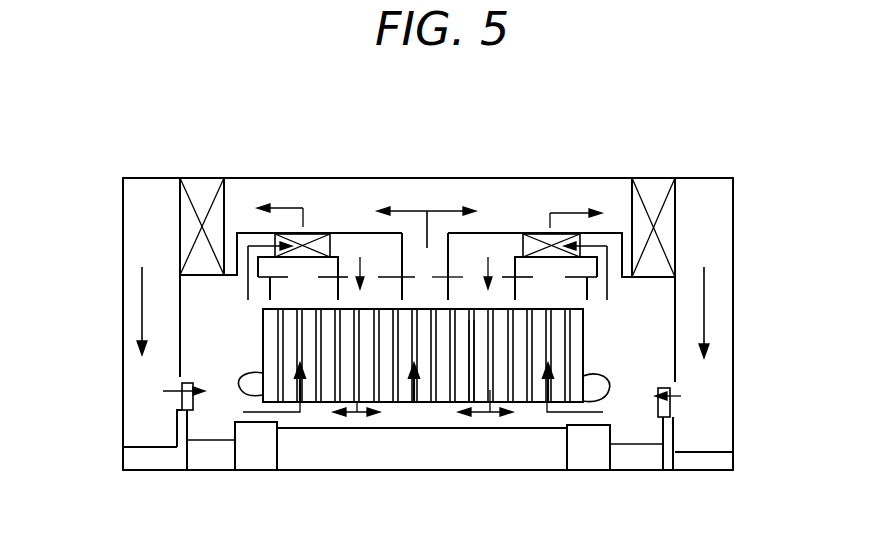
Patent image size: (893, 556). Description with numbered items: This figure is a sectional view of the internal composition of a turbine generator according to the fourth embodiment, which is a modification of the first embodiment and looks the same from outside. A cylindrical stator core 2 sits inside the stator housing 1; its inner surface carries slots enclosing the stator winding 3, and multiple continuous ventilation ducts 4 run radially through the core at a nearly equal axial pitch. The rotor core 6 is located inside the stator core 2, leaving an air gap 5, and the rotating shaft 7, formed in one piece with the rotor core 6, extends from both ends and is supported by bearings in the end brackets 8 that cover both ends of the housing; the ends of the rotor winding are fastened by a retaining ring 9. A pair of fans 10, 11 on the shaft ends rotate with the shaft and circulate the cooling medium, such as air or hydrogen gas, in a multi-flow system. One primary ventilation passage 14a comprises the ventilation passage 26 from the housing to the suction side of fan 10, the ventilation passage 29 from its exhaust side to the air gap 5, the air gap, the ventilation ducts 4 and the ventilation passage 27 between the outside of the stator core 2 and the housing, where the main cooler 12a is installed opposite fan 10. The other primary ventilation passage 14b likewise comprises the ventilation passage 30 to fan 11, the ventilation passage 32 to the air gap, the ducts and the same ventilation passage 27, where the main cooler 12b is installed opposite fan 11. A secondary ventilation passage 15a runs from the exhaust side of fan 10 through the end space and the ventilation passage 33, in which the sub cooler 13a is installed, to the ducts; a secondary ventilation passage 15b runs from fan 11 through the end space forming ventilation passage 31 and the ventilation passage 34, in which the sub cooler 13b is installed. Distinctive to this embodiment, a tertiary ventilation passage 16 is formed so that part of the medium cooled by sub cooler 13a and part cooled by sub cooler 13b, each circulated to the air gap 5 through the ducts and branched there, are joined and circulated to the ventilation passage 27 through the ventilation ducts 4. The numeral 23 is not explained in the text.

The stator housing 1 is at (435, 192).
The stator core 2 is at (427, 308).
The stator winding 3 is at (240, 375).
The ventilation ducts 4 is at (473, 383).
The air gap 5 is at (325, 423).
The rotor core 6 is at (400, 462).
The rotating shaft 7 is at (152, 458).
The end bracket 8 is at (123, 273).
The retaining ring 9 is at (263, 443).
The fan 10 is at (183, 403).
The fan 11 is at (670, 405).
The main cooler 12a is at (203, 190).
The main cooler 12b is at (660, 197).
The sub cooler 13a is at (318, 233).
The sub cooler 13b is at (578, 245).
The primary ventilation passage 14a is at (133, 317).
The primary ventilation passage 14b is at (805, 250).
The secondary ventilation passage 15a is at (190, 352).
The secondary ventilation passage 15b is at (665, 298).
The tertiary ventilation passage 16 is at (413, 250).
The left pin 23 is at (182, 380).
The ventilation passage 26 is at (122, 437).
The ventilation passage 27 is at (295, 192).
The ventilation passage 29 is at (217, 425).
The ventilation passage 30 is at (713, 385).
The ventilation passage 31 is at (665, 330).
The ventilation passage 32 is at (630, 430).
The ventilation passage 33 is at (248, 240).
The ventilation passage 34 is at (503, 253).